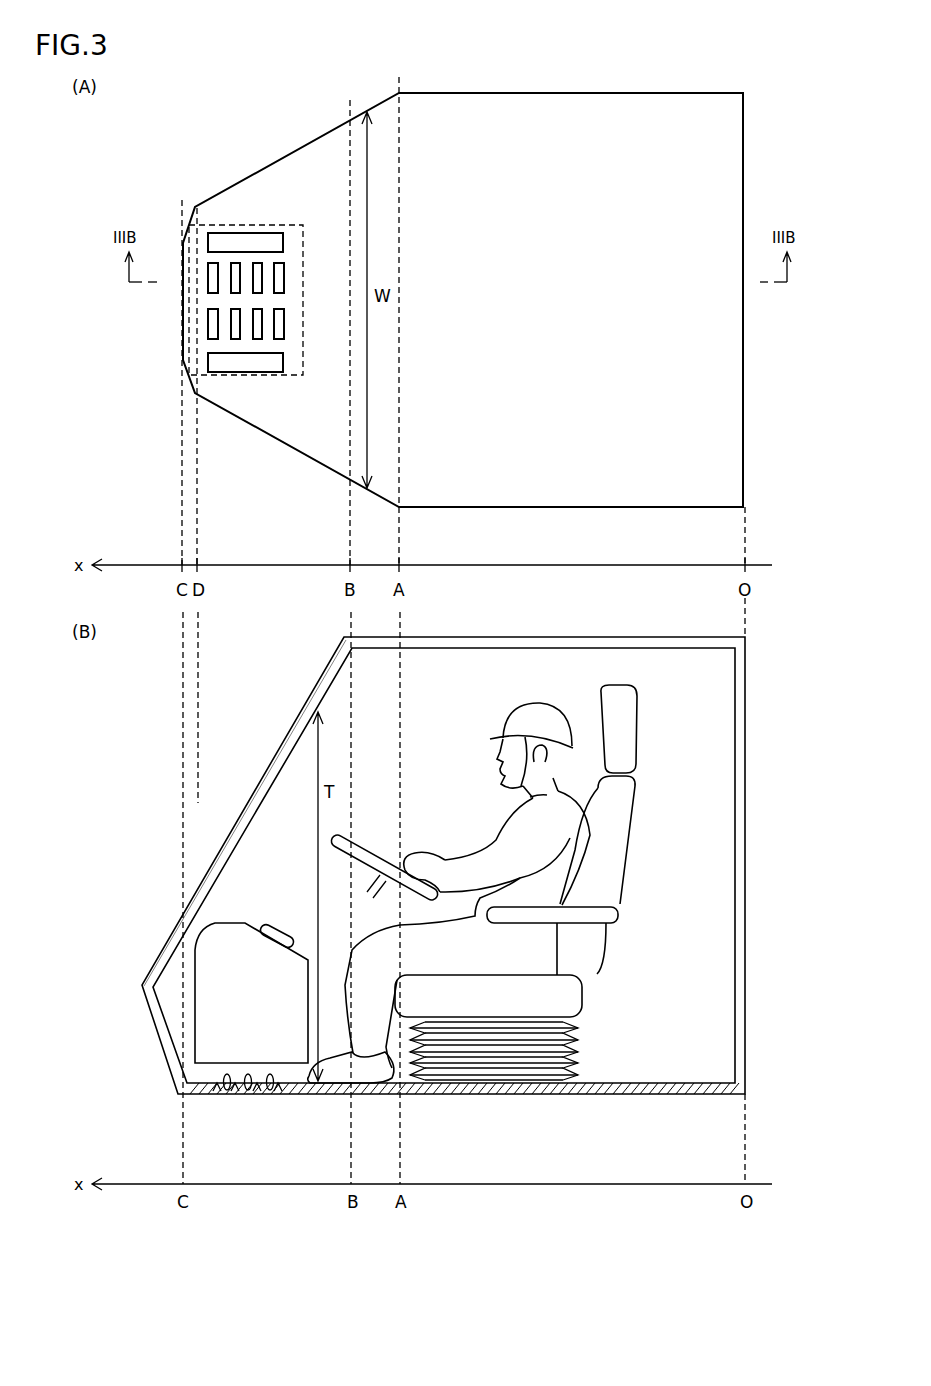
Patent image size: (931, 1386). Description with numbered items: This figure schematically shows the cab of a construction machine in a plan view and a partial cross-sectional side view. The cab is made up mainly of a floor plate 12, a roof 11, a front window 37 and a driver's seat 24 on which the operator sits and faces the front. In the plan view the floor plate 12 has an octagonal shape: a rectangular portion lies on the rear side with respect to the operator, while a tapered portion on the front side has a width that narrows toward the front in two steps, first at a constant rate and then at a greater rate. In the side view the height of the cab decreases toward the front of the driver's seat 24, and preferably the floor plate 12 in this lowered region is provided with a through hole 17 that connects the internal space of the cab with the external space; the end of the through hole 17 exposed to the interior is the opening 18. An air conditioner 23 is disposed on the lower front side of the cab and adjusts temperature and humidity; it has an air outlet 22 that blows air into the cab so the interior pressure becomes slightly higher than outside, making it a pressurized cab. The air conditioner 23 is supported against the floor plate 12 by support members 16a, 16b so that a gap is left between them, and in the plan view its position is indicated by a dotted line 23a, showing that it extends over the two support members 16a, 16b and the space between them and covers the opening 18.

The roof 11 is at (674, 641).
The floor plate 12 is at (671, 106).
The support member 16a is at (249, 240).
The support member 16b is at (250, 365).
The through hole 17 is at (210, 278).
The opening 18 is at (229, 270).
The air outlet 22 is at (274, 928).
The air conditioner 23 is at (208, 1026).
The dotted line 23a is at (304, 234).
The driver's seat 24 is at (600, 868).
The front window 37 is at (284, 746).